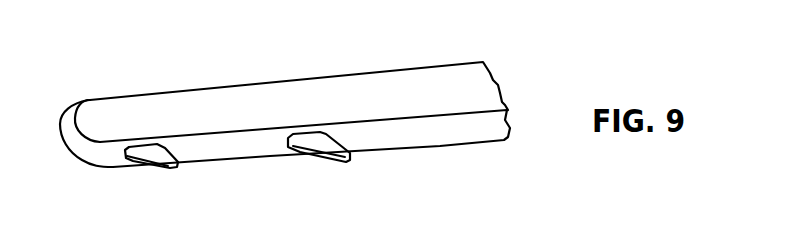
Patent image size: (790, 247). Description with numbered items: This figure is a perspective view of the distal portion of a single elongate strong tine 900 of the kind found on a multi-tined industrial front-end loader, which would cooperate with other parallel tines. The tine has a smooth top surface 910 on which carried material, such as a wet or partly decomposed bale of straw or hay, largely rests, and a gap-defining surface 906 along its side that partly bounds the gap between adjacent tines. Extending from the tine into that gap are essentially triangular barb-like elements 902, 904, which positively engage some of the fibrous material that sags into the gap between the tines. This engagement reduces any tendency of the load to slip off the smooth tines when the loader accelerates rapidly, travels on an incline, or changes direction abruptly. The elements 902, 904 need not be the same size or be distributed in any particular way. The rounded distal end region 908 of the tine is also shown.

The tine 900 is at (243, 69).
The barb-like element 902 is at (160, 162).
The barb-like element 904 is at (329, 151).
The gap-defining surface 906 is at (467, 133).
The rounded end cap 908 is at (77, 137).
The smooth top surface 910 is at (458, 83).